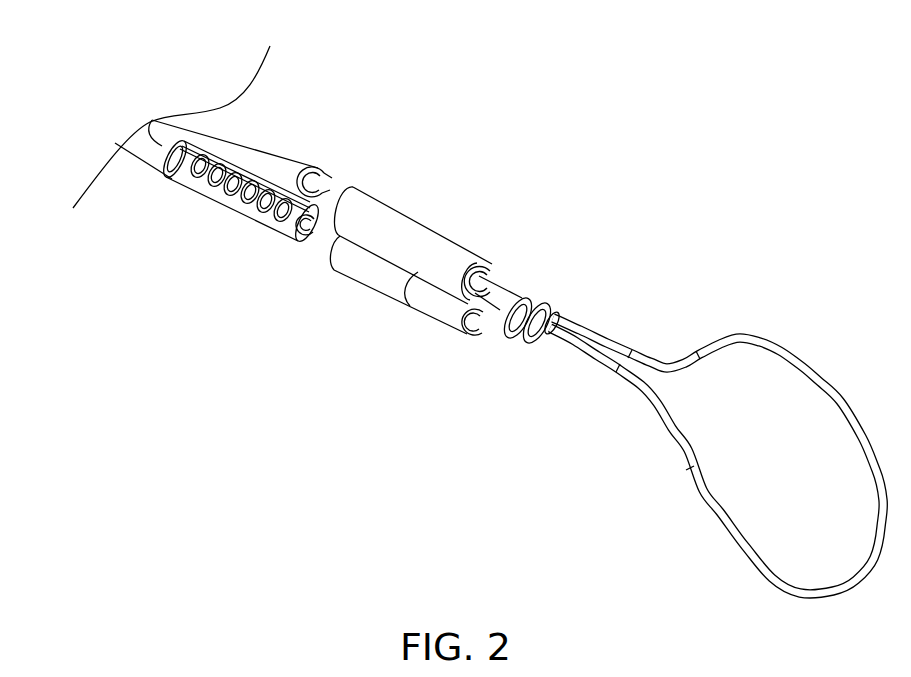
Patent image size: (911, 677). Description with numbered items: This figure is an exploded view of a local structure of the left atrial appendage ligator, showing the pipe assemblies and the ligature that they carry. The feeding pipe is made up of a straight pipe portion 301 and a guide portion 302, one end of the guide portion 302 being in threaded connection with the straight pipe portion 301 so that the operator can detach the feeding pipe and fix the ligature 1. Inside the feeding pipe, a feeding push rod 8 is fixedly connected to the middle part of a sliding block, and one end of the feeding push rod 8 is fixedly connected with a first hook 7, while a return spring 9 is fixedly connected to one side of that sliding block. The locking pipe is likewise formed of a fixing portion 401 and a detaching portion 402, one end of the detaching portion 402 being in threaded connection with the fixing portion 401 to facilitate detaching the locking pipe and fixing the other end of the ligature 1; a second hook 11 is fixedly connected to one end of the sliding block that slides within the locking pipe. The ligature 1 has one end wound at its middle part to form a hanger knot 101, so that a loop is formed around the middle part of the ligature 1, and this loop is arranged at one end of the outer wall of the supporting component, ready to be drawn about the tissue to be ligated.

The ligature 1 is at (604, 338).
The first hook 7 is at (306, 240).
The feeding push rod 8 is at (243, 211).
The return spring 9 is at (248, 196).
The second hook 11 is at (334, 182).
The hanger knot 101 is at (517, 334).
The straight pipe portion 301 is at (142, 140).
The guide portion 302 is at (386, 276).
The fixing portion 401 is at (248, 143).
The detaching portion 402 is at (391, 226).